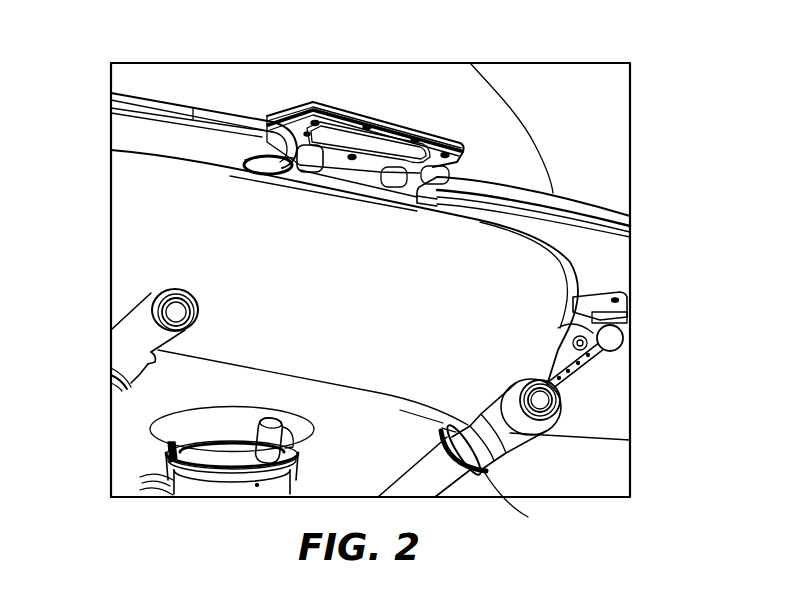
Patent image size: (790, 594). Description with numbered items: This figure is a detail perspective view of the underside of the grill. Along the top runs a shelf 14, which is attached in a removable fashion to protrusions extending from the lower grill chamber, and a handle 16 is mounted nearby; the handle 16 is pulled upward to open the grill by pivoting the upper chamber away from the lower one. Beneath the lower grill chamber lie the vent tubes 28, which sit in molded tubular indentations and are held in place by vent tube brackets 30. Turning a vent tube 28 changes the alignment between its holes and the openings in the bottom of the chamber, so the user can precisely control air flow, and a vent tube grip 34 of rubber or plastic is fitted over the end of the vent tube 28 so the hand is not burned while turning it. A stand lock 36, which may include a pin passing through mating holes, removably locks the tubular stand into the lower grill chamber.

The shelf 14 is at (568, 197).
The handle 16 is at (423, 130).
The vent tube 28 is at (500, 445).
The vent tube bracket 30 is at (489, 485).
The vent tube grip 34 is at (557, 397).
The stand lock 36 is at (262, 430).